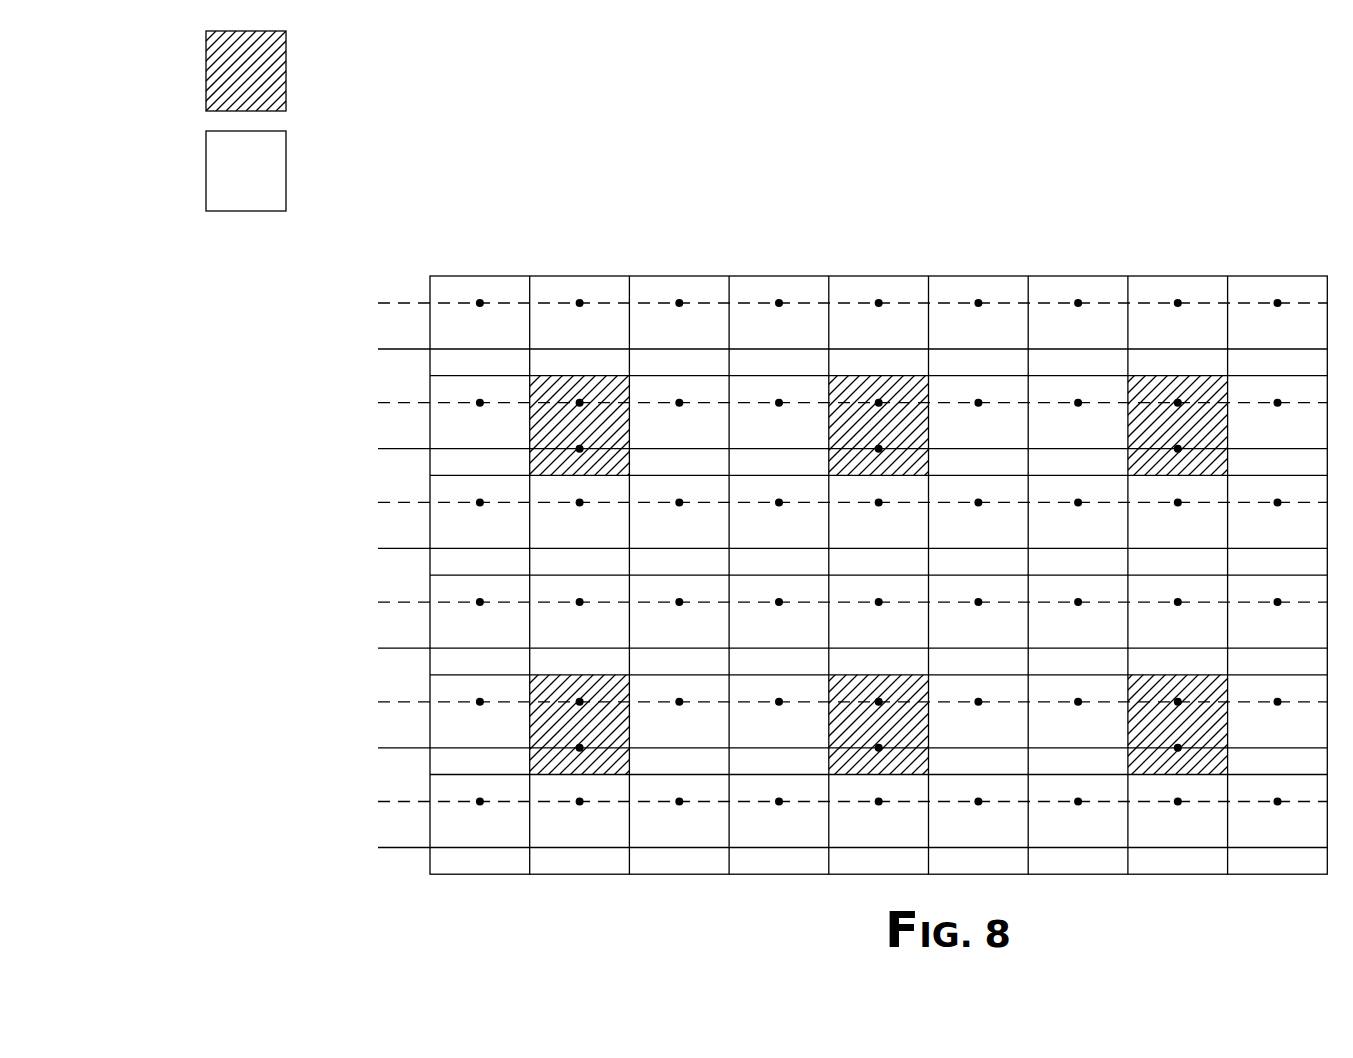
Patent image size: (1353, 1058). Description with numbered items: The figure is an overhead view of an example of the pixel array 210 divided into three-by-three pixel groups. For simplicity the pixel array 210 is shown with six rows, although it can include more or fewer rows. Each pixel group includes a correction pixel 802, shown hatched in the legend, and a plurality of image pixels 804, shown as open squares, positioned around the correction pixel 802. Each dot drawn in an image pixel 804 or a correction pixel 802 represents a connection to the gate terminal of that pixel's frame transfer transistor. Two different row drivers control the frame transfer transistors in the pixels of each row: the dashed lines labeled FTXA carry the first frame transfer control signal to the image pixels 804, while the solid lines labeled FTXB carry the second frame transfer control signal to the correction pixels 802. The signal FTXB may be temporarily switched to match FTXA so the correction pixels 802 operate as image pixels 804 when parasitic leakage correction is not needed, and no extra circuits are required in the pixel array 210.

The correction pixel 802 is at (587, 87).
The image pixel 804 is at (508, 185).
The pixel array 210 is at (1247, 217).